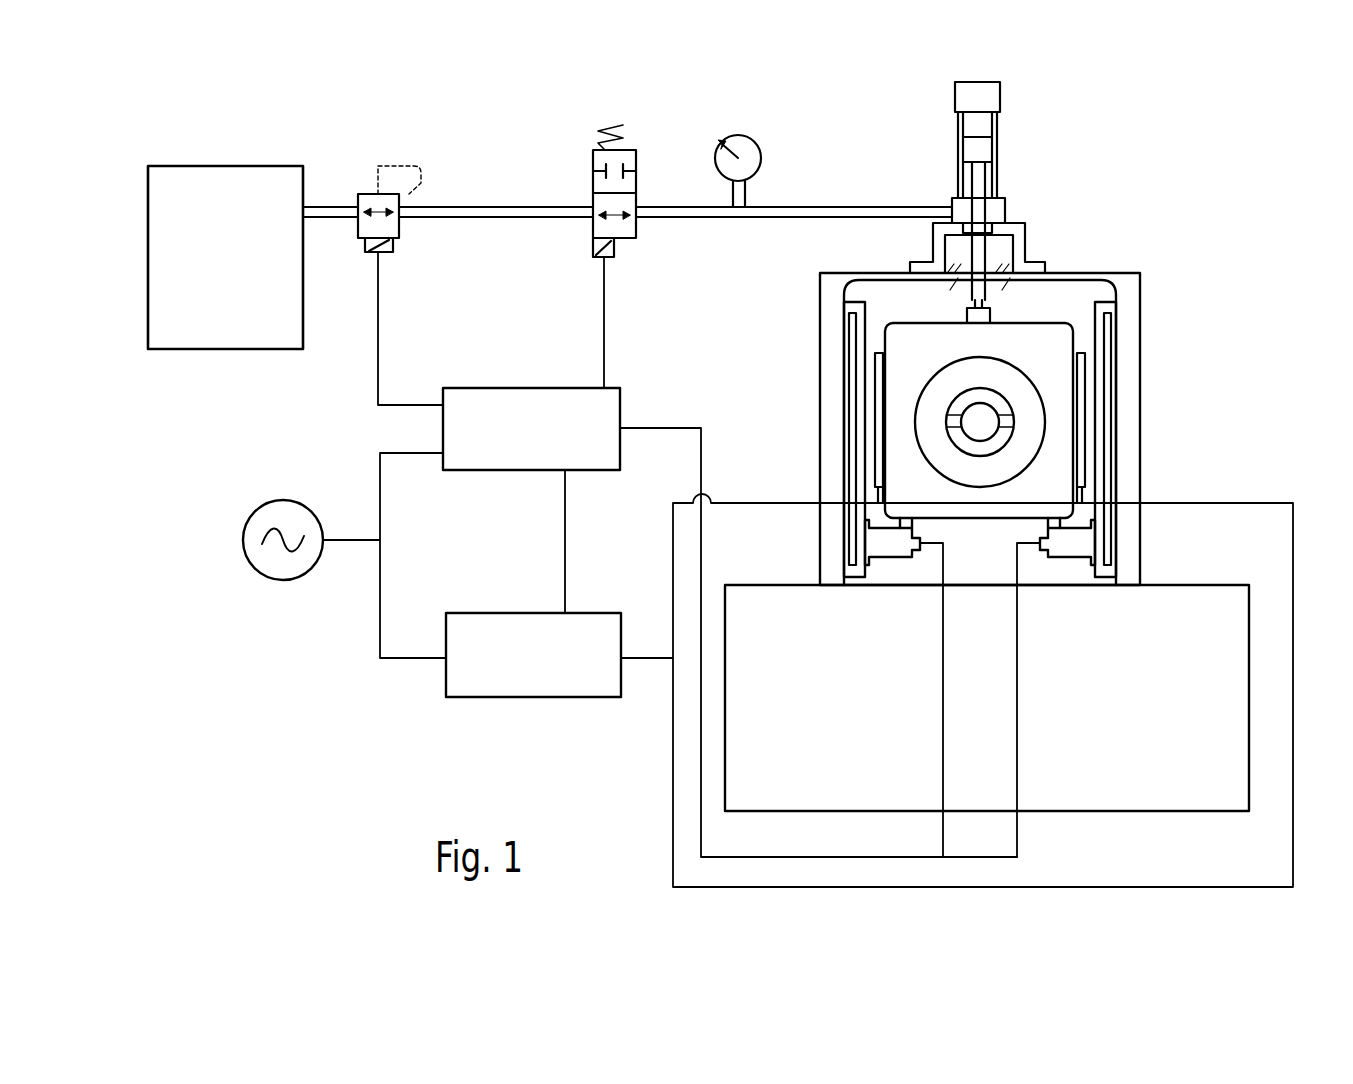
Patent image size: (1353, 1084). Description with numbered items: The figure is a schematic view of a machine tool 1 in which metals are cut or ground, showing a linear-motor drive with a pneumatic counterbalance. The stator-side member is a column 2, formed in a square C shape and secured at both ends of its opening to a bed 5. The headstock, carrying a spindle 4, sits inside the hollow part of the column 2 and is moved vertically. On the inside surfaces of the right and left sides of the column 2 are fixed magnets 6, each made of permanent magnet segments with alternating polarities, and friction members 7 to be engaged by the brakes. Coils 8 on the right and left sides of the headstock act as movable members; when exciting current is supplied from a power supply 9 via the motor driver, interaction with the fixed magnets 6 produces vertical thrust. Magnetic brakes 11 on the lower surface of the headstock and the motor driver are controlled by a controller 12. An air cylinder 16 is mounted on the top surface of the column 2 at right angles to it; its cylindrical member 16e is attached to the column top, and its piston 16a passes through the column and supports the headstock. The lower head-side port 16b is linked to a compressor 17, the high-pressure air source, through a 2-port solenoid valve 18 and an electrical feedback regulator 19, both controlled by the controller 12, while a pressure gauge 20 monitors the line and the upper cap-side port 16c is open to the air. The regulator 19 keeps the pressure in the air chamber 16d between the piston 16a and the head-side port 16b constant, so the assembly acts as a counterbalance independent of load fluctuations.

The machine tool 1 is at (1228, 158).
The column 2 is at (1168, 272).
The spindle 4 is at (1003, 392).
The bed 5 is at (490, 613).
The fixed magnets 6 is at (857, 392).
The friction members 7 is at (850, 447).
The coils 8 is at (880, 473).
The power supply 9 is at (287, 575).
The magnetic brakes 11 is at (890, 546).
The controller 12 is at (488, 388).
The air cylinder 16 is at (1005, 175).
The piston 16a is at (985, 150).
The head-side port 16b is at (1005, 208).
The cap-side port 16c is at (955, 85).
The air chamber 16d is at (967, 184).
The cylindrical member 16e is at (997, 121).
The compressor 17 is at (200, 165).
The 2-port solenoid valve 18 is at (593, 160).
The electrical feedback regulator 19 is at (367, 194).
The pressure gauge 20 is at (758, 143).